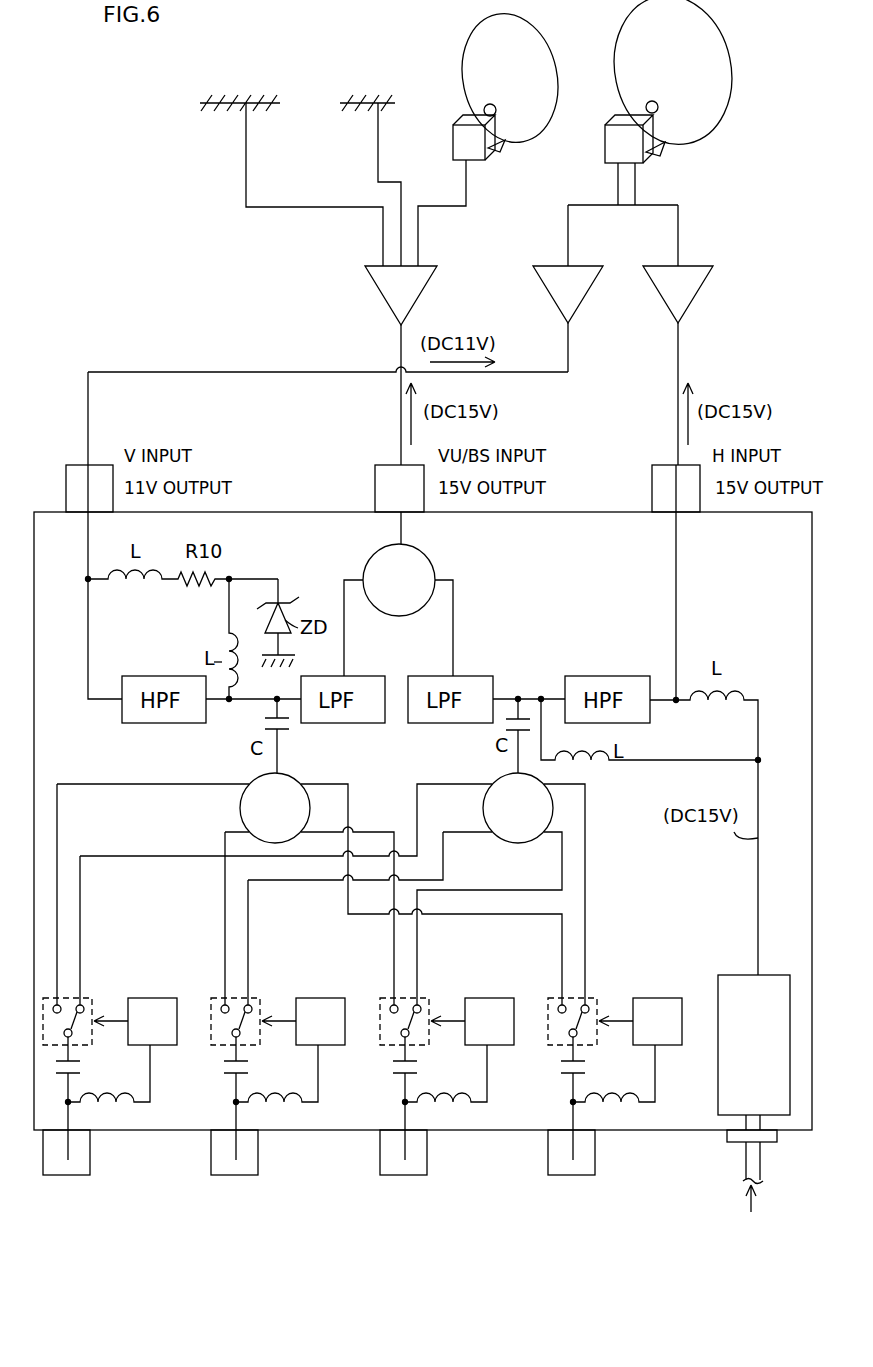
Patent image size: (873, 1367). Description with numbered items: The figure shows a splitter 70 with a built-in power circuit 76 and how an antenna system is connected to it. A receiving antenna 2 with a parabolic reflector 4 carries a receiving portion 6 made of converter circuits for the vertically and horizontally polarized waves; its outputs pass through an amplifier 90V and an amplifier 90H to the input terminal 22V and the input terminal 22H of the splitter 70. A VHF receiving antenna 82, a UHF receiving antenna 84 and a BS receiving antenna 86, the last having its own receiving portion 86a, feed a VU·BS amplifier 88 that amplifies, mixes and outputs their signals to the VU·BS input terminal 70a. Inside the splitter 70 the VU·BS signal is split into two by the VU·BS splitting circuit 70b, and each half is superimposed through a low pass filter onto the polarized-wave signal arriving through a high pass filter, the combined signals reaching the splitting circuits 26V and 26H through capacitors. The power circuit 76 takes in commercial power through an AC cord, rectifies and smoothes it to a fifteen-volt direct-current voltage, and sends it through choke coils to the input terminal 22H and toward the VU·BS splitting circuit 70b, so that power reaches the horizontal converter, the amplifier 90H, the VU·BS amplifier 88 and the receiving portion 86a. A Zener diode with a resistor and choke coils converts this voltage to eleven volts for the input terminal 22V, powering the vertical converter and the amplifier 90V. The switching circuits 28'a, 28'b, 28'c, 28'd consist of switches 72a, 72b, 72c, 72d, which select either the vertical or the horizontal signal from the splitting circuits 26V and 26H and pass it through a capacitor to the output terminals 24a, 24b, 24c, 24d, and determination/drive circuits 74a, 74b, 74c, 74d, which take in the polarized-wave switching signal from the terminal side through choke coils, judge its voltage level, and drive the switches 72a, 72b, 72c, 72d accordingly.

The receiving antenna 2 is at (733, 91).
The parabolic reflector 4 is at (712, 48).
The receiving portion 6 is at (605, 146).
The input terminal 22V is at (72, 462).
The input terminal 22H is at (652, 494).
The output terminal 24a is at (92, 1167).
The output terminal 24b is at (260, 1167).
The output terminal 24c is at (429, 1167).
The output terminal 24d is at (597, 1167).
The splitting circuit 26V is at (293, 788).
The splitting circuit 26H is at (492, 788).
The switching circuit 28'a is at (118, 1042).
The switching circuit 28'b is at (286, 1042).
The switching circuit 28'c is at (454, 1042).
The switching circuit 28'd is at (623, 1042).
The splitter 70 is at (584, 512).
The VU·BS input terminal 70a is at (372, 494).
The VU·BS splitting circuit 70b is at (368, 562).
The switch 72a is at (83, 1003).
The switch 72b is at (251, 1003).
The switch 72c is at (420, 1003).
The switch 72d is at (588, 1003).
The determination/drive circuit 74a is at (153, 1000).
The determination/drive circuit 74b is at (321, 1000).
The determination/drive circuit 74c is at (490, 1000).
The determination/drive circuit 74d is at (658, 1000).
The power circuit 76 is at (765, 980).
The VHF receiving antenna 82 is at (354, 110).
The UHF receiving antenna 84 is at (216, 110).
The BS receiving antenna 86 is at (450, 113).
The receiving portion 86a is at (472, 157).
The VU·BS amplifier 88 is at (424, 262).
The amplifier 90V is at (556, 256).
The amplifier 90H is at (688, 264).